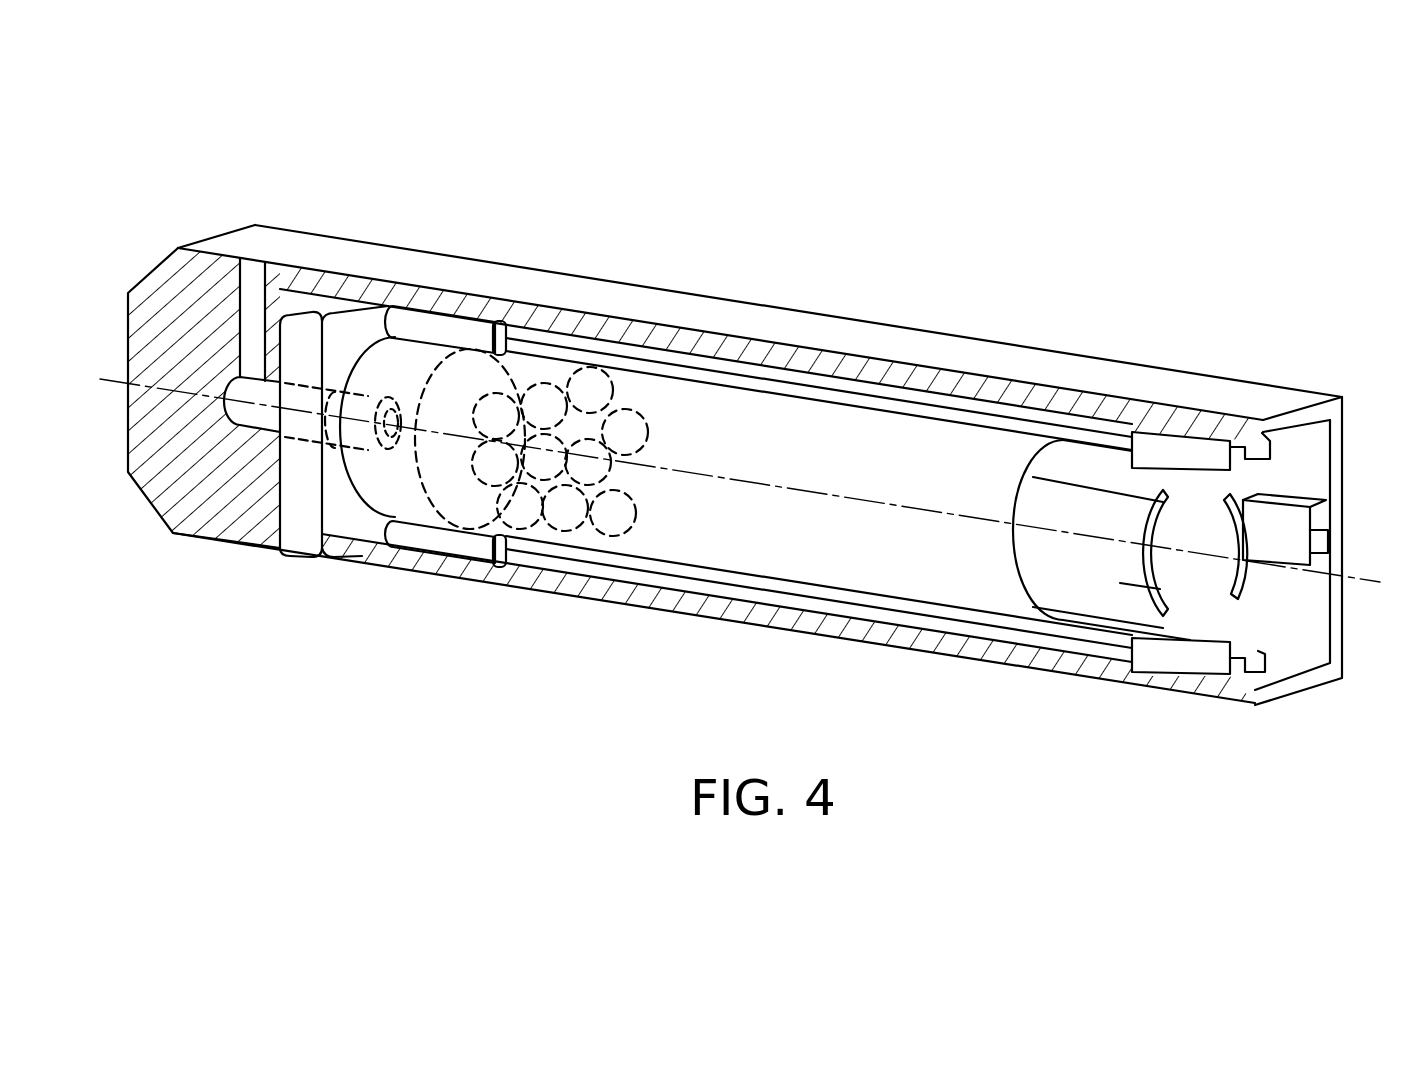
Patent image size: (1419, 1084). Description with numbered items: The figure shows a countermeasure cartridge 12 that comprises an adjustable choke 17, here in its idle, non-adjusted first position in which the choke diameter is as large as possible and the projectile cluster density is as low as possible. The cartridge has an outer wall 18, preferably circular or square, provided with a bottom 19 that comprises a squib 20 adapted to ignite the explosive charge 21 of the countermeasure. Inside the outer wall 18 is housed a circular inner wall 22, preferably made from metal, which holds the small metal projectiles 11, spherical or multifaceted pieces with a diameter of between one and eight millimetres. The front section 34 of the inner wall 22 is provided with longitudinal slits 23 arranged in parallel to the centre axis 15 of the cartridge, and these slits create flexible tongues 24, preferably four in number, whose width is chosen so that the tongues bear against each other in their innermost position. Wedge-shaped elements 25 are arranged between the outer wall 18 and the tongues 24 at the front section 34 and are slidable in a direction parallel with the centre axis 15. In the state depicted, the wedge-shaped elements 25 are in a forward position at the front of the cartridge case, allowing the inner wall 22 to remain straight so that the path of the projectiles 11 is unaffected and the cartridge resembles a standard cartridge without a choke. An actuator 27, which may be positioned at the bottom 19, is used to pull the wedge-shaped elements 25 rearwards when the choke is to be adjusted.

The countermeasure cartridge 12 is at (993, 271).
The bottom 19 is at (216, 500).
The squib 20 is at (360, 435).
The explosive charge 21 is at (440, 468).
The actuator 27 is at (474, 545).
The small metal projectiles 11 is at (568, 510).
The centre axis 15 is at (717, 480).
The outer wall 18 is at (767, 612).
The inner wall 22 is at (880, 556).
The front section 34 is at (1001, 678).
The flexible tongues 24 is at (1078, 575).
The longitudinal slits 23 is at (1155, 625).
The wedge-shaped elements 25 is at (1265, 462).
The adjustable choke 17 is at (1282, 598).